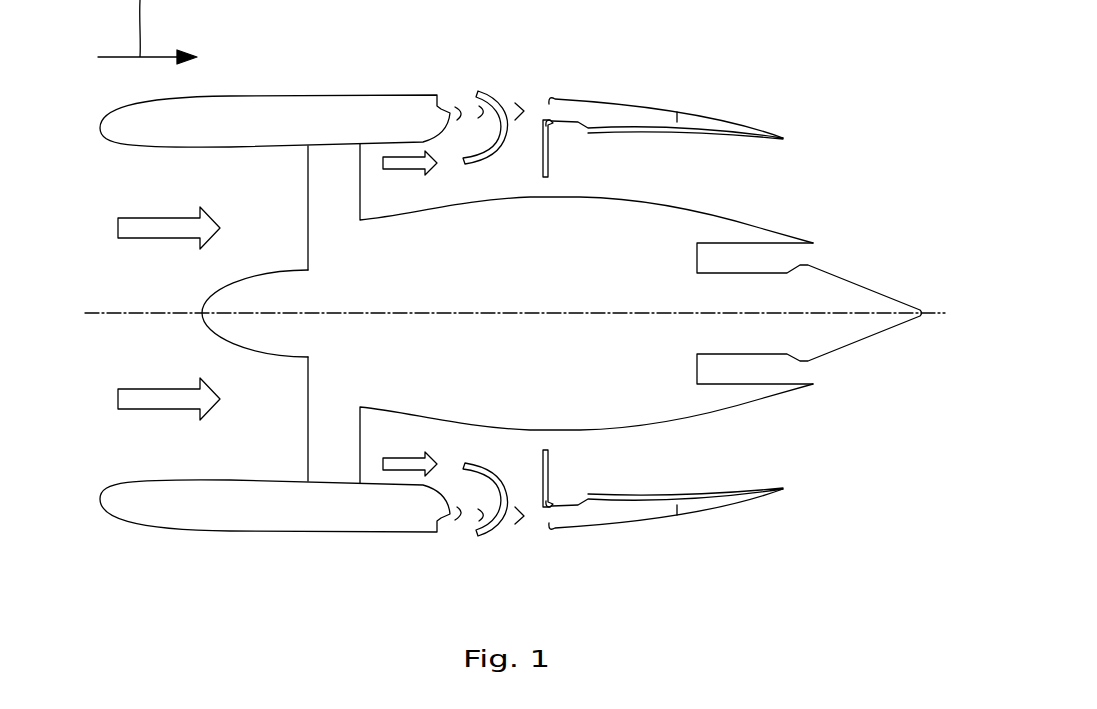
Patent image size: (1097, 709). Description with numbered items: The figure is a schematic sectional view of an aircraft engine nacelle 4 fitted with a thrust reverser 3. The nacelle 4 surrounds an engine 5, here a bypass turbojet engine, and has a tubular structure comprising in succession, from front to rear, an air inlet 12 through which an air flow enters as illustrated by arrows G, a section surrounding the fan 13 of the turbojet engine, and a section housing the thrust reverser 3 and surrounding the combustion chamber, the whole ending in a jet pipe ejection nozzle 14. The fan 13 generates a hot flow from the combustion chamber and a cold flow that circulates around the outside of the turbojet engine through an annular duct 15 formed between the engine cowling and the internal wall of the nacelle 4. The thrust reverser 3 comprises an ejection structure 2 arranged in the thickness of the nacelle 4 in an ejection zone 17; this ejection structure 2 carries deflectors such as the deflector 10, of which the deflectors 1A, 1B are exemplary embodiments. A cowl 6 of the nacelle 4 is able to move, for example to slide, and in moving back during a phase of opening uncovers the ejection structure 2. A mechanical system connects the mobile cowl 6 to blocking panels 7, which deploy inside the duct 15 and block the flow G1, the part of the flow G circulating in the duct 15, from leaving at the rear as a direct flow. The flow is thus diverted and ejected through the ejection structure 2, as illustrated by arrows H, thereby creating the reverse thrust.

The deflector 1A is at (456, 108).
The deflector 1B is at (518, 577).
The ejection structure 2 is at (520, 90).
The thrust reverser 3 is at (620, 125).
The nacelle 4 is at (360, 94).
The engine 5 is at (130, 337).
The cowl 6 is at (620, 101).
The blocking panels 7 is at (550, 165).
The deflector 10 is at (543, 95).
The air inlet 12 is at (93, 191).
The fan 13 is at (306, 437).
The jet pipe ejection nozzle 14 is at (869, 338).
The annular duct 15 is at (695, 128).
The ejection zone 17 is at (500, 66).
The air flow G is at (147, 240).
The flow in the duct G1 is at (402, 170).
The diverted flow H is at (492, 166).